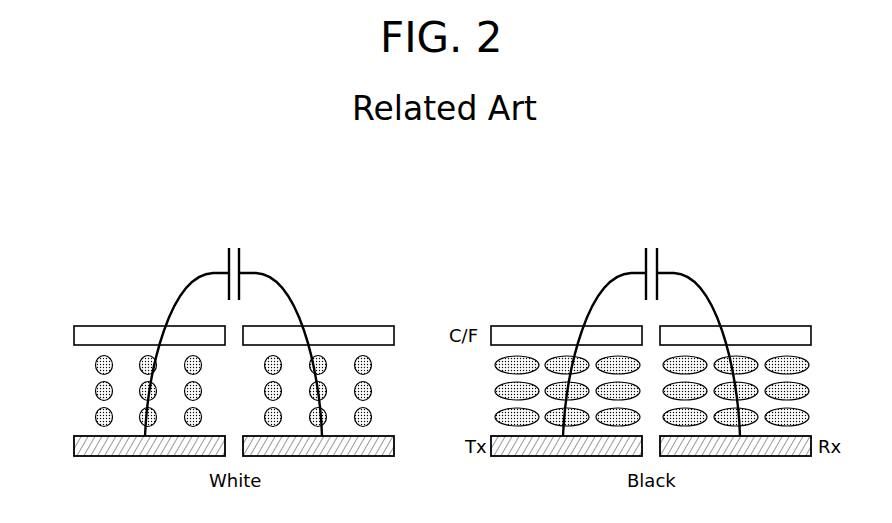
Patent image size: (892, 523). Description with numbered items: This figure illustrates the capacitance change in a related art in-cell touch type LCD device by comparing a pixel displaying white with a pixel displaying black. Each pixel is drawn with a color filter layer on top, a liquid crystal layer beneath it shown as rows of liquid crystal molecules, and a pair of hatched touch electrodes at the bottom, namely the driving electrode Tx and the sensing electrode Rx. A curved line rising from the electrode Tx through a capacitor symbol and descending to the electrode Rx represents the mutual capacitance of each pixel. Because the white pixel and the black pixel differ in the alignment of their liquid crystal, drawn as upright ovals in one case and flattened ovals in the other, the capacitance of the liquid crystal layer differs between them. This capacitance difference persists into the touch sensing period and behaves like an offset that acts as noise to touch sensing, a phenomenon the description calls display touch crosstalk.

The touch driving electrode Tx is at (135, 446).
The touch sensing electrode Rx is at (333, 446).